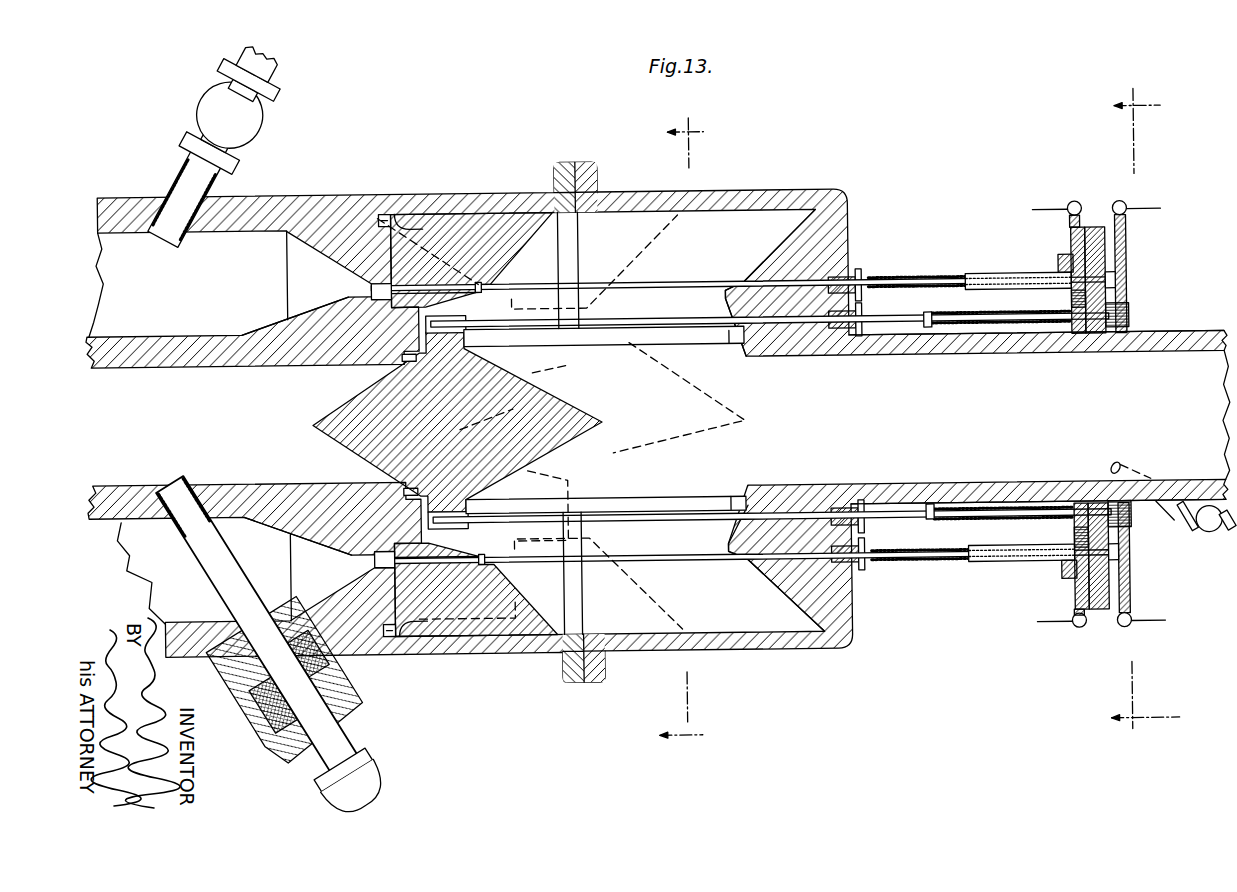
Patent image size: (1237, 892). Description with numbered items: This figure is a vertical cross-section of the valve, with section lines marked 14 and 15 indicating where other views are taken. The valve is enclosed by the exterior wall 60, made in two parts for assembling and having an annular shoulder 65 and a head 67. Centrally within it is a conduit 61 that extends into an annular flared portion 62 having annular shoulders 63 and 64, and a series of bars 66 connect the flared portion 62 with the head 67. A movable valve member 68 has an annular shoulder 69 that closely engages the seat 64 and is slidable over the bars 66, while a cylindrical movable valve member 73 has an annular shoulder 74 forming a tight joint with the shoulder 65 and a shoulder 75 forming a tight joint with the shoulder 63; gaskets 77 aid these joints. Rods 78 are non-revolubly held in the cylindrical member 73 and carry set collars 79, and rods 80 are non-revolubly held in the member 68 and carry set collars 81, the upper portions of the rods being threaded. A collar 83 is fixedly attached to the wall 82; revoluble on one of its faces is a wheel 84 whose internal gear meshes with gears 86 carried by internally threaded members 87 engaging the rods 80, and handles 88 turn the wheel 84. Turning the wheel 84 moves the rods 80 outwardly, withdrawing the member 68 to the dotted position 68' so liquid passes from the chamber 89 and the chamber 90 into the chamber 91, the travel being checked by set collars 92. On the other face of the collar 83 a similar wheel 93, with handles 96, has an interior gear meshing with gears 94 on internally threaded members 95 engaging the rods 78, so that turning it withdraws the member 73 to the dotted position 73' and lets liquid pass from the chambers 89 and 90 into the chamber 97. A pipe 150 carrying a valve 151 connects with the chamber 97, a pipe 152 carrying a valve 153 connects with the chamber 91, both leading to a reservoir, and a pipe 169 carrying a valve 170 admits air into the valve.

The exterior wall 60 is at (300, 192).
The conduit 61 is at (176, 331).
The annular flared portion 62 is at (287, 313).
The annular shoulder 63 is at (393, 308).
The annular shoulder 64 is at (403, 357).
The annular shoulder 65 is at (378, 212).
The bars 66 is at (695, 498).
The head 67 is at (788, 359).
The movable valve member 68 is at (435, 422).
The position of valve member 68' is at (602, 441).
The annular shoulder 69 is at (395, 372).
The cylindrical movable valve member 73 is at (474, 396).
The position of cylindrical valve member 73' is at (567, 393).
The annular shoulder 74 is at (413, 214).
The shoulder 75 is at (427, 300).
The gaskets 77 is at (383, 620).
The rods 78 is at (678, 561).
The set collars 79 is at (485, 284).
The rods 80 is at (663, 521).
The set collars 81 is at (467, 316).
The wall 82 is at (978, 358).
The collar 83 is at (1097, 233).
The wheel 84 is at (1129, 590).
The gear 86 is at (1131, 307).
The internally threaded revoluble members 87 is at (1131, 325).
The handles 88 is at (1150, 633).
The chamber 89 is at (968, 420).
The chamber 90 is at (537, 492).
The chamber 91 is at (190, 402).
The set collars 92 is at (932, 523).
The revoluble wheel 93 is at (1073, 590).
The gears 94 is at (1068, 278).
The internally threaded members 95 is at (1000, 566).
The handles 96 is at (1057, 633).
The chamber 97 is at (201, 257).
The pipe 150 is at (168, 176).
The valve 151 is at (258, 126).
The pipe 152 is at (322, 733).
The valve 153 is at (378, 776).
The pipe 169 is at (1155, 510).
The valve 170 is at (1207, 539).
The section line 14 is at (1154, 408).
The section line 15 is at (681, 437).